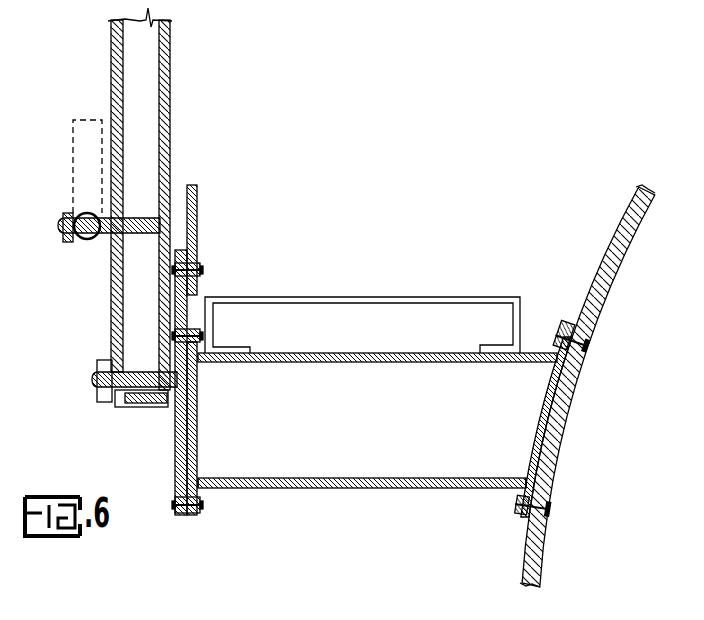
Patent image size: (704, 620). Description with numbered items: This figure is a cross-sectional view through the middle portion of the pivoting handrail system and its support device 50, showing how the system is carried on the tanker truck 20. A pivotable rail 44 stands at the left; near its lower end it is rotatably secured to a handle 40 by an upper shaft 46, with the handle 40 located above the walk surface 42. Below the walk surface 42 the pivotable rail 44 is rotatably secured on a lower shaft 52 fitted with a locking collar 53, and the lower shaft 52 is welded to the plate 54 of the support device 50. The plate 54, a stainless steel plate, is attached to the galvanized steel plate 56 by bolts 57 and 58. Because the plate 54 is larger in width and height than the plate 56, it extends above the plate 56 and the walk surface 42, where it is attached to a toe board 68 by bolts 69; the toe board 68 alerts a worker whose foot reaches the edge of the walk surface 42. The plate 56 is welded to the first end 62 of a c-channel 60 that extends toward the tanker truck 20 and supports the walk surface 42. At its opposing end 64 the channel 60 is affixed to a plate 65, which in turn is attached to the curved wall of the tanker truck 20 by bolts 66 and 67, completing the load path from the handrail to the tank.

The tanker truck 20 is at (608, 245).
The handle 40 is at (72, 133).
The walk surface 42 is at (345, 340).
The pivotable rail 44 is at (112, 340).
The upper shaft 46 is at (105, 237).
The support device 50 is at (352, 533).
The lower shaft 52 is at (92, 378).
The locking collar 53 is at (98, 362).
The plate 54 is at (177, 427).
The plate 56 is at (200, 447).
The bolt 57 is at (175, 500).
The bolt 58 is at (198, 337).
The channel 60 is at (442, 353).
The first end 62 is at (200, 480).
The opposing end 64 is at (522, 477).
The plate 65 is at (535, 423).
The bolt 66 is at (515, 500).
The bolt 67 is at (557, 338).
The toe board 68 is at (197, 213).
The bolt 69 is at (200, 270).